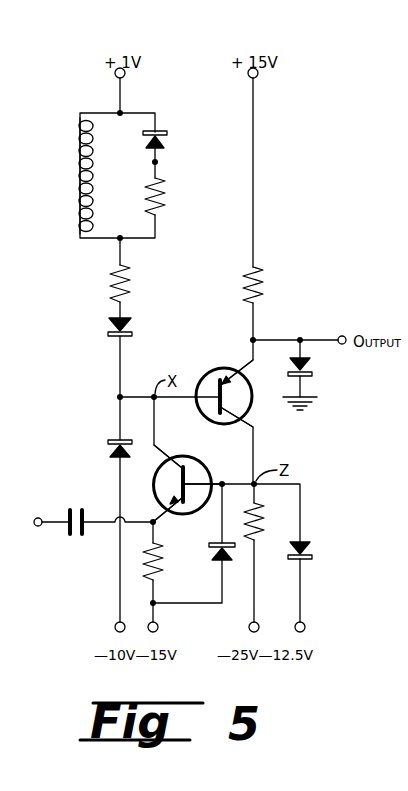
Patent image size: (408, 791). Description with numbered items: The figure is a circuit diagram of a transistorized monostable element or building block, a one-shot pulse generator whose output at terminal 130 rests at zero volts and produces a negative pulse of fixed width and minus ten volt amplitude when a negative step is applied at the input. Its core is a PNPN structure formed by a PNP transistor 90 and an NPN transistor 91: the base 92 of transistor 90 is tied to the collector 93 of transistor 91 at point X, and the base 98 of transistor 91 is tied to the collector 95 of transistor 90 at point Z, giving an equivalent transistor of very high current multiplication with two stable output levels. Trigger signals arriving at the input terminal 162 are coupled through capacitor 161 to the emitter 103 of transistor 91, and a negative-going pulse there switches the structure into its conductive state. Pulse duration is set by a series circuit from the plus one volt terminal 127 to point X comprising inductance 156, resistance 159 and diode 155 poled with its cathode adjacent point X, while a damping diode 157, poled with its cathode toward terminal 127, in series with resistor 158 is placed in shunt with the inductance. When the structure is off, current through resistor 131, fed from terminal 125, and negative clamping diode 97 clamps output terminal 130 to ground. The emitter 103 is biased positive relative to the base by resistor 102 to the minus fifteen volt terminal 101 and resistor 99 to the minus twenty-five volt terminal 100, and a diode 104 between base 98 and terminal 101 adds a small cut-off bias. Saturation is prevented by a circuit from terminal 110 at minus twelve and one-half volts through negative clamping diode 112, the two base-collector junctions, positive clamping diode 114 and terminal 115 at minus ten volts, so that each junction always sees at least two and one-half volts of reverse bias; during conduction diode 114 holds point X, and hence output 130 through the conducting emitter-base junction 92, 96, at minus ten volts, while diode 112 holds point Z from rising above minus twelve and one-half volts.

The terminal 127 is at (114, 73).
The +15V supply terminal 125 is at (259, 73).
The inductance 156 is at (79, 165).
The damping diode 157 is at (158, 131).
The resistor 158 is at (166, 195).
The resistance 159 is at (131, 283).
The diode 155 is at (116, 336).
The resistor 131 is at (263, 288).
The output terminal 130 is at (338, 336).
The negative clamping diode 97 is at (304, 378).
The PNP transistor 90 is at (207, 369).
The emitter 96 is at (226, 367).
The base 92 is at (204, 401).
The collector 95 is at (245, 409).
The collector 93 is at (188, 455).
The NPN transistor 91 is at (212, 458).
The emitter 103 is at (153, 492).
The base 98 is at (200, 510).
The positive clamping diode 114 is at (116, 440).
The capacitor 161 is at (67, 520).
The input terminal 162 is at (34, 524).
The terminal 115 is at (115, 627).
The resistor 102 is at (143, 553).
The terminal 101 is at (158, 627).
The diode 104 is at (214, 547).
The resistor 99 is at (262, 527).
The terminal 100 is at (278, 607).
The negative clamping diode 112 is at (302, 561).
The terminal 110 is at (304, 623).